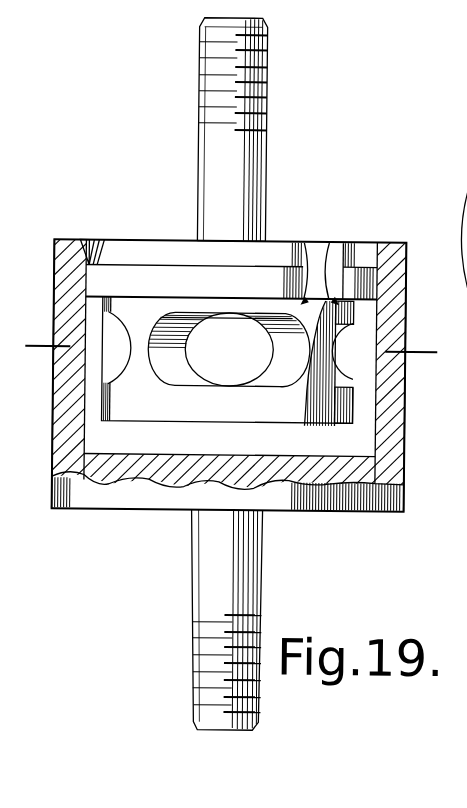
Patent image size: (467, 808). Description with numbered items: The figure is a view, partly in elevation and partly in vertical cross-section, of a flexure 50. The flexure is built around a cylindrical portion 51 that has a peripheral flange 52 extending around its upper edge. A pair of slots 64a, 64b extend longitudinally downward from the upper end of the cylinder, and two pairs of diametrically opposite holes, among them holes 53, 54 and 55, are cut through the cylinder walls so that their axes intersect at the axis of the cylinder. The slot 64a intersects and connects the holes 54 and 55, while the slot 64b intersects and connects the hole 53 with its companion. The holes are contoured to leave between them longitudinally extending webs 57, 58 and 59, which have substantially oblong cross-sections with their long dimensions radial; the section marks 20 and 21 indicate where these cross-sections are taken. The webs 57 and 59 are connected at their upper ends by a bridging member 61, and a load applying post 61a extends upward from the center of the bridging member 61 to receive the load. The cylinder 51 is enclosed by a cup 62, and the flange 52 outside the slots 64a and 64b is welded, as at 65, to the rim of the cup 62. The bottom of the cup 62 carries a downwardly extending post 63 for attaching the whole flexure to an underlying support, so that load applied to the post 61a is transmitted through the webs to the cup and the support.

The flexure 50 is at (297, 445).
The cylindrical portion 51 is at (368, 325).
The peripheral flange 52 is at (134, 272).
The hole 53 is at (353, 378).
The hole 54 is at (453, 219).
The hole 55 is at (193, 378).
The web 57 is at (307, 416).
The web 58 is at (138, 345).
The web 59 is at (117, 385).
The bridging member 61 is at (323, 243).
The load applying post 61a is at (250, 148).
The cup 62 is at (70, 240).
The post 63 is at (246, 577).
The slot 64a is at (303, 242).
The slot 64b is at (328, 242).
The weld 65 is at (87, 241).
The section line FIG. 20 is at (33, 357).
The section line FIG. 21 is at (42, 339).